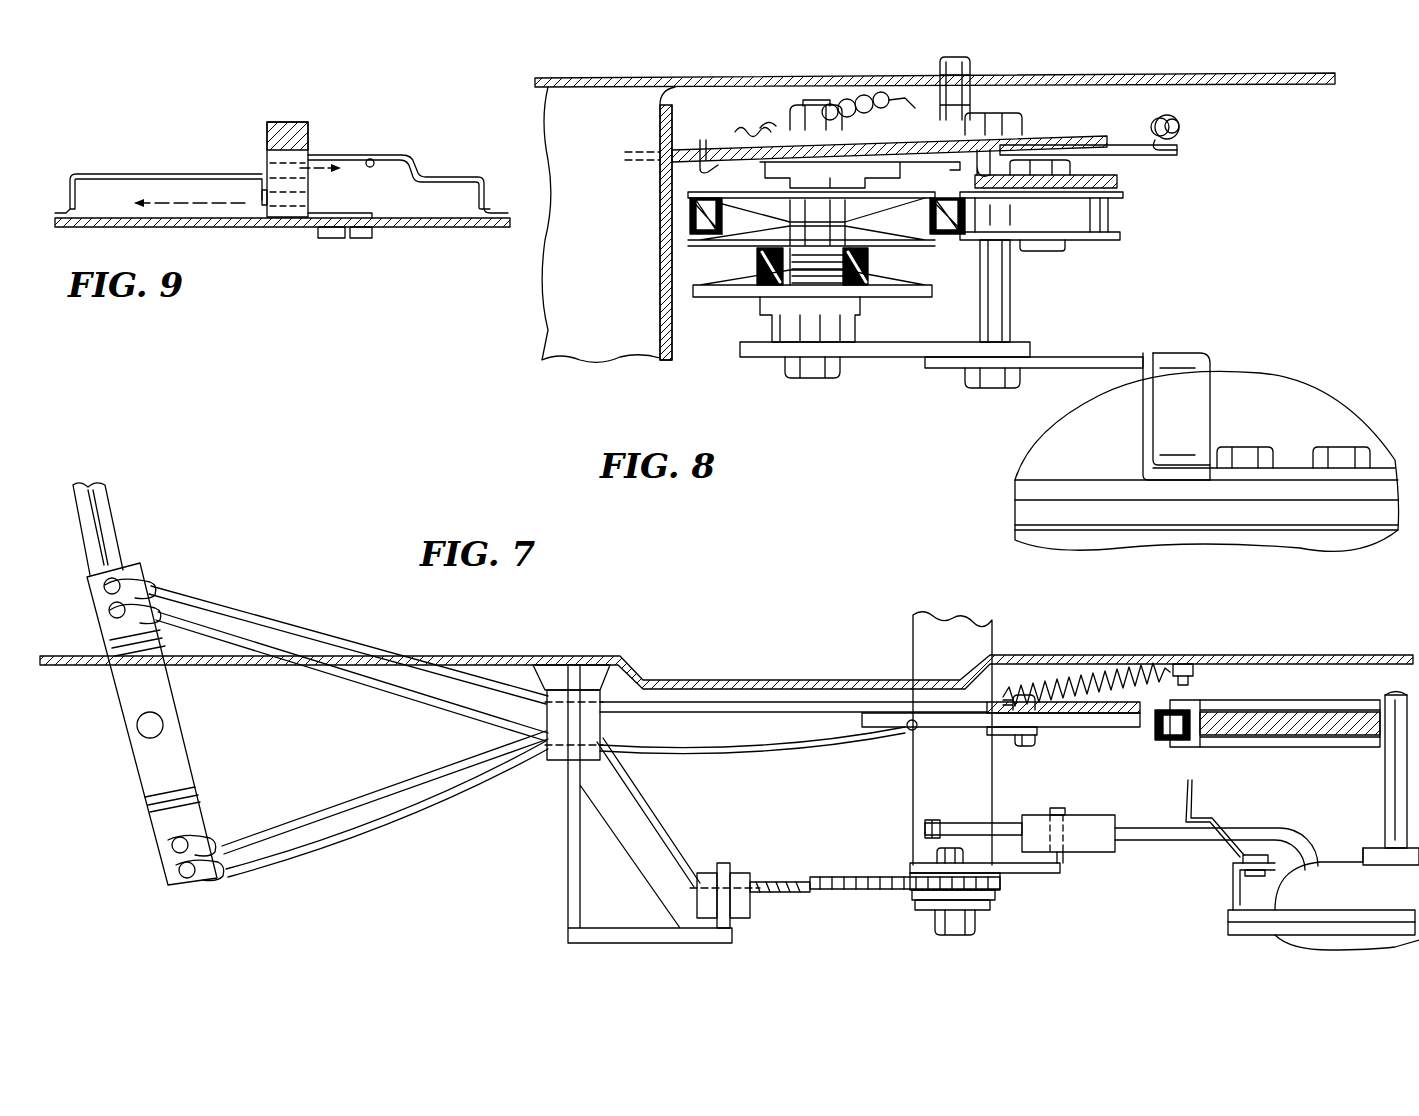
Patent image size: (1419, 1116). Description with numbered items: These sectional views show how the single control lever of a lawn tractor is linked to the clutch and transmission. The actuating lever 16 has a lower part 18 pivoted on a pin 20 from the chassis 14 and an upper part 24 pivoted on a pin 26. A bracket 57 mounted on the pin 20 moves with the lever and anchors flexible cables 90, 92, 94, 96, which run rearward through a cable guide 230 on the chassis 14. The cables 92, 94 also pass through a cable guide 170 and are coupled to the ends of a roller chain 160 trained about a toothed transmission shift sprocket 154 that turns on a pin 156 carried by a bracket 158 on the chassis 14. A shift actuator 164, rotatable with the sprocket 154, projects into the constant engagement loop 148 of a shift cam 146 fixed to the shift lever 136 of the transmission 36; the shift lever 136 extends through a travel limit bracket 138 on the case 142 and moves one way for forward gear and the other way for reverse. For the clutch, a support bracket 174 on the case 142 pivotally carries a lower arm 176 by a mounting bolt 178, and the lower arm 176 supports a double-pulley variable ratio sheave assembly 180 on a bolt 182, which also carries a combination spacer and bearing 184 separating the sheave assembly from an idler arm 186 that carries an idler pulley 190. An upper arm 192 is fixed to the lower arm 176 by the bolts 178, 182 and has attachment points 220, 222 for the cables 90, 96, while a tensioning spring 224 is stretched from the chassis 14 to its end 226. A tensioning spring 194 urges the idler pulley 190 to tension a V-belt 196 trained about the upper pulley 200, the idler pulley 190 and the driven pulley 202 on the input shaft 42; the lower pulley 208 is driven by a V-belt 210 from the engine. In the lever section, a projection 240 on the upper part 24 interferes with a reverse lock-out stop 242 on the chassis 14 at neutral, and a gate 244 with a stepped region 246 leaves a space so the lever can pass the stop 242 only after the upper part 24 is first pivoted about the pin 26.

In FIG. 9, the chassis 14 is at (405, 230).
In FIG. 8, the chassis 14 is at (590, 293).
In FIG. 7, the chassis 14 is at (815, 678).
In FIG. 9, the actuating lever 16 is at (322, 117).
In FIG. 7, the actuating lever 16 is at (128, 525).
In FIG. 9, the lower part 18 is at (267, 140).
In FIG. 7, the pin 20 is at (160, 720).
In FIG. 9, the upper part 24 is at (262, 212).
In FIG. 9, the pin 26 is at (310, 188).
In FIG. 7, the transmission 36 is at (1343, 820).
In FIG. 7, the input shaft 42 is at (1390, 780).
In FIG. 7, the bracket 57 is at (225, 740).
In FIG. 7, the flexible cable 90 is at (755, 700).
In FIG. 7, the flexible cable 92 is at (770, 880).
In FIG. 7, the flexible cable 94 is at (635, 790).
In FIG. 7, the flexible cable 96 is at (788, 750).
In FIG. 7, the shift lever 136 is at (1160, 840).
In FIG. 7, the travel limit bracket 138 is at (1195, 792).
In FIG. 8, the case 142 is at (1305, 400).
In FIG. 7, the case 142 is at (1340, 880).
In FIG. 7, the shift cam 146 is at (1097, 826).
In FIG. 7, the constant engagement loop 148 is at (955, 828).
In FIG. 7, the transmission shift sprocket 154 is at (1000, 880).
In FIG. 7, the pin 156 is at (940, 857).
In FIG. 7, the bracket 158 is at (942, 781).
In FIG. 7, the roller chain 160 is at (885, 890).
In FIG. 7, the shift actuator 164 is at (1060, 862).
In FIG. 7, the cable guide 170 is at (750, 920).
In FIG. 8, the support bracket 174 is at (1195, 418).
In FIG. 8, the lower arm 176 is at (900, 357).
In FIG. 8, the mounting bolt 178 is at (1002, 322).
In FIG. 8, the double-pulley variable ratio sheave assembly 180 is at (735, 327).
In FIG. 8, the bolt 182 is at (812, 378).
In FIG. 8, the combination spacer and bearing 184 is at (845, 166).
In FIG. 8, the idler arm 186 is at (688, 150).
In FIG. 8, the idler pulley 190 is at (1125, 196).
In FIG. 8, the upper arm 192 is at (1027, 142).
In FIG. 8, the tensioning spring 194 is at (760, 128).
In FIG. 8, the V-belt 196 is at (690, 212).
In FIG. 7, the V-belt 196 is at (1158, 728).
In FIG. 8, the upper pulley 200 is at (685, 195).
In FIG. 7, the driven pulley 202 is at (1313, 697).
In FIG. 8, the lower pulley 208 is at (712, 307).
In FIG. 8, the V-belt 210 is at (755, 265).
In FIG. 7, the attachment point 220 is at (1027, 692).
In FIG. 7, the attachment point 222 is at (1035, 742).
In FIG. 8, the tensioning spring 224 is at (1182, 127).
In FIG. 7, the tensioning spring 224 is at (1100, 680).
In FIG. 7, the end 226 is at (860, 720).
In FIG. 7, the cable guide 230 is at (560, 757).
In FIG. 9, the projection 240 is at (290, 210).
In FIG. 9, the reverse lock-out stop 242 is at (368, 232).
In FIG. 9, the gate 244 is at (352, 158).
In FIG. 9, the stepped region 246 is at (375, 165).